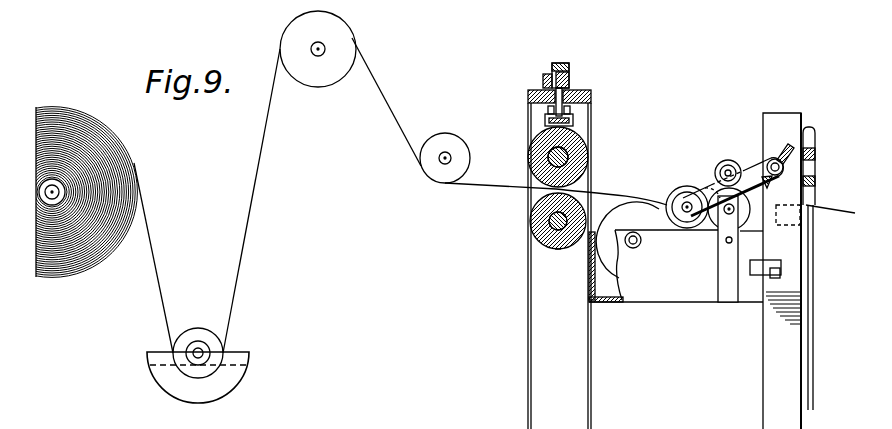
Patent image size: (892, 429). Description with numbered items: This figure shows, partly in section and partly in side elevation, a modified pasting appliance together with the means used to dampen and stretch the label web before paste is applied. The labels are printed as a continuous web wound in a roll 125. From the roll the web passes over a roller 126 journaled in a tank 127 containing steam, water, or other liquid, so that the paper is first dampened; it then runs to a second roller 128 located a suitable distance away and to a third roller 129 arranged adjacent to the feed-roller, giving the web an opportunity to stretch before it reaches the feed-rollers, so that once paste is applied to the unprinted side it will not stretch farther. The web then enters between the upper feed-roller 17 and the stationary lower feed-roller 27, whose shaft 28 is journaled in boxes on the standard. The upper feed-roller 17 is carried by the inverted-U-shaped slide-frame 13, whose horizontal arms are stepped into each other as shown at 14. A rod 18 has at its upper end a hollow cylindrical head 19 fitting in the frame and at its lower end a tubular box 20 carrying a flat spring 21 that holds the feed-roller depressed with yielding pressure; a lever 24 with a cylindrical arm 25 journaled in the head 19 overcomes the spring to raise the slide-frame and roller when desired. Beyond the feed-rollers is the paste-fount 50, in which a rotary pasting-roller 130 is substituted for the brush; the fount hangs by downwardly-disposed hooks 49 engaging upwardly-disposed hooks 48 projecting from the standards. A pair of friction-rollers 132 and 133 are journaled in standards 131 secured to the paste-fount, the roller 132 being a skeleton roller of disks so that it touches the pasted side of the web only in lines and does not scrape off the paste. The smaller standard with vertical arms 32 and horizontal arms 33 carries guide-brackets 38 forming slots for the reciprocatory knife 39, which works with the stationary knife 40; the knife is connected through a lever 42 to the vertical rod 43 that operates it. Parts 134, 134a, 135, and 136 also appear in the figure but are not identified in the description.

The roll of label web 125 is at (128, 154).
The roller 126 is at (203, 333).
The tank 127 is at (198, 377).
The second roller 128 is at (318, 49).
The third roller 129 is at (445, 158).
The slide-frame 13 is at (561, 68).
The stepped joint of frame arms 14 is at (552, 68).
The hollow cylindrical head 19 is at (569, 74).
The lever 24 is at (543, 80).
The cylindrical arm 25 is at (569, 82).
The rod 18 is at (548, 110).
The flat spring 21 is at (573, 118).
The tubular box 20 is at (549, 121).
The upper feed-roller 17 is at (528, 156).
The shaft 28 is at (549, 218).
The stationary feed-roller 27 is at (559, 249).
The rotary pasting-roller 130 is at (627, 240).
The paste-fount 50 is at (676, 266).
The standards 131 is at (737, 258).
The skeleton friction-roller 132 is at (717, 222).
The horizontal arms 33 is at (782, 263).
The vertical arms 32 is at (770, 336).
The guide-brackets 38 is at (812, 125).
The lever 42 is at (815, 153).
The reciprocatory knife 39 is at (815, 173).
The vertical rod 43 is at (813, 350).
The stationary knife 40 is at (794, 226).
The downwardly-disposed hooks 49 is at (760, 268).
The upwardly-disposed hooks 48 is at (780, 276).
The roller rim 134a is at (672, 190).
The roller 134 is at (684, 193).
The lever arm 135 is at (713, 183).
The friction-roller 133 is at (725, 160).
The pivot pin 136 is at (781, 159).